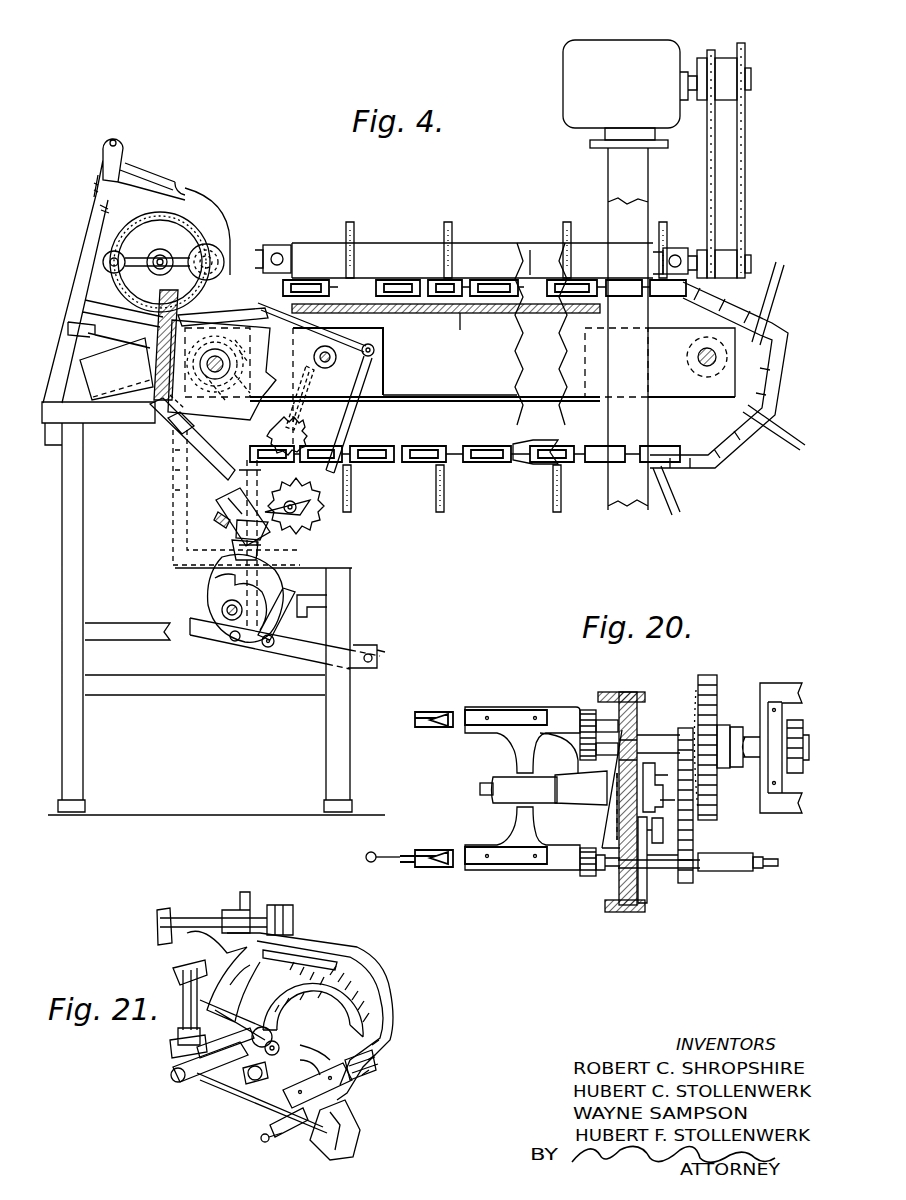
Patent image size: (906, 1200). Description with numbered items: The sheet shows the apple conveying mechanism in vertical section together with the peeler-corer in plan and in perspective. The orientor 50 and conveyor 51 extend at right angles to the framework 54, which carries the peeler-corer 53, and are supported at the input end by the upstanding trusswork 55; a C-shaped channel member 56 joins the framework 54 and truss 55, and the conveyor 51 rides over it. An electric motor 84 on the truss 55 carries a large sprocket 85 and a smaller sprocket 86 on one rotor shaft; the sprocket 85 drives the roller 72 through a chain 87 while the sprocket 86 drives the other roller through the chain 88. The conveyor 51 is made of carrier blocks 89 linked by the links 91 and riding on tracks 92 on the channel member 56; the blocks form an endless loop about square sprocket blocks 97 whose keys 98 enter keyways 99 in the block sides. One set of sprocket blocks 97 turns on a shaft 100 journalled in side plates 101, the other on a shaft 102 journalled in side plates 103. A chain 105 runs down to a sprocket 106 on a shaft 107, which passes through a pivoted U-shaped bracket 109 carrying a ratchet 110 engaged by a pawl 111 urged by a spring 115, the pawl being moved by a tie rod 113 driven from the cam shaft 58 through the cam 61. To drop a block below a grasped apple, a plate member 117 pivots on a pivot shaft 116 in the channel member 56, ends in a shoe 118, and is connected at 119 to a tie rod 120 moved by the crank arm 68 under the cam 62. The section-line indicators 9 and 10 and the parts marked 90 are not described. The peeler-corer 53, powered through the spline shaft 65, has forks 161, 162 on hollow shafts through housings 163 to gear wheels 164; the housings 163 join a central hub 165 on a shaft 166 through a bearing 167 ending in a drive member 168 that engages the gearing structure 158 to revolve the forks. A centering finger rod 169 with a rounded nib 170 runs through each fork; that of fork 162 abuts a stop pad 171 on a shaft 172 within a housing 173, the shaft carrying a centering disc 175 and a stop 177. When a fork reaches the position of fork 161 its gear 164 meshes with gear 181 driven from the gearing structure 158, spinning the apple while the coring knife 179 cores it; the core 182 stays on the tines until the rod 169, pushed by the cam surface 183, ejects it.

In FIG. 4, the section line 9 is at (151, 508).
In FIG. 4, the section line 10 is at (339, 195).
In FIG. 4, the orientor 50 is at (402, 243).
In FIG. 4, the conveyor 51 is at (477, 365).
In FIG. 4, the peeler-corer 53 is at (195, 190).
In FIG. 20, the peeler-corer 53 is at (620, 700).
In FIG. 21, the peeler-corer 53 is at (375, 975).
In FIG. 4, the framework 54 is at (350, 621).
In FIG. 4, the upstanding trusswork 55 is at (608, 174).
In FIG. 4, the C-shaped channel member 56 is at (418, 313).
In FIG. 4, the cam shaft 58 is at (228, 616).
In FIG. 4, the cam 61 is at (228, 582).
In FIG. 4, the cam 62 is at (222, 608).
In FIG. 20, the spline shaft 65 is at (738, 745).
In FIG. 4, the crank arm 68 is at (283, 641).
In FIG. 4, the roller 72 is at (537, 262).
In FIG. 4, the electric motor 84 is at (577, 62).
In FIG. 4, the large sprocket 85 is at (747, 52).
In FIG. 4, the smaller sprocket 86 is at (708, 52).
In FIG. 4, the chain 87 is at (745, 158).
In FIG. 4, the chain 88 is at (707, 160).
In FIG. 4, the carrier blocks 89 is at (505, 446).
In FIG. 4, the post 90 is at (452, 255).
In FIG. 4, the links 91 is at (370, 281).
In FIG. 4, the tracks 92 is at (459, 325).
In FIG. 4, the sprocket blocks 97 is at (232, 414).
In FIG. 4, the keys 98 is at (231, 370).
In FIG. 4, the keyways 99 is at (414, 281).
In FIG. 4, the shaft 100 is at (702, 362).
In FIG. 4, the side plates 101 is at (660, 390).
In FIG. 4, the shaft 102 is at (220, 360).
In FIG. 4, the side plates 103 is at (365, 392).
In FIG. 4, the chain 105 is at (300, 440).
In FIG. 4, the sprocket 106 is at (286, 478).
In FIG. 4, the shaft 107 is at (310, 540).
In FIG. 4, the U-shaped bracket 109 is at (220, 500).
In FIG. 4, the ratchet 110 is at (300, 556).
In FIG. 4, the pawl 111 is at (252, 536).
In FIG. 4, the tie rod 113 is at (238, 550).
In FIG. 4, the spring 115 is at (234, 520).
In FIG. 4, the pivot shaft 116 is at (326, 368).
In FIG. 4, the elongated plate member 117 is at (322, 334).
In FIG. 4, the shoe 118 is at (240, 314).
In FIG. 4, the pivotal connection 119 is at (374, 352).
In FIG. 4, the tie rod 120 is at (344, 428).
In FIG. 20, the gearing structure 158 is at (718, 672).
In FIG. 20, the fork 161 is at (436, 712).
In FIG. 20, the fork 162 is at (440, 868).
In FIG. 21, the fork 162 is at (288, 1135).
In FIG. 20, the housings 163 is at (548, 716).
In FIG. 21, the housings 163 is at (338, 1095).
In FIG. 20, the gear wheels 164 is at (590, 714).
In FIG. 21, the gear wheels 164 is at (375, 1068).
In FIG. 20, the central hub 165 is at (500, 796).
In FIG. 20, the shaft 166 is at (480, 790).
In FIG. 21, the shaft 166 is at (250, 1086).
In FIG. 20, the bearing 167 is at (585, 795).
In FIG. 20, the drive member 168 is at (645, 775).
In FIG. 20, the centering finger rod 169 is at (598, 692).
In FIG. 20, the nib 170 is at (371, 852).
In FIG. 21, the nib 170 is at (261, 1139).
In FIG. 20, the stop pad 171 is at (598, 870).
In FIG. 20, the shaft 172 is at (658, 875).
In FIG. 20, the housing 173 is at (720, 871).
In FIG. 21, the shaft centering disc 175 is at (222, 1050).
In FIG. 20, the stop 177 is at (758, 870).
In FIG. 21, the coring knife 179 is at (296, 1110).
In FIG. 20, the gear 181 is at (596, 750).
In FIG. 21, the apple core 182 is at (190, 1080).
In FIG. 20, the cam surface 183 is at (606, 832).
In FIG. 21, the cam surface 183 is at (348, 1036).